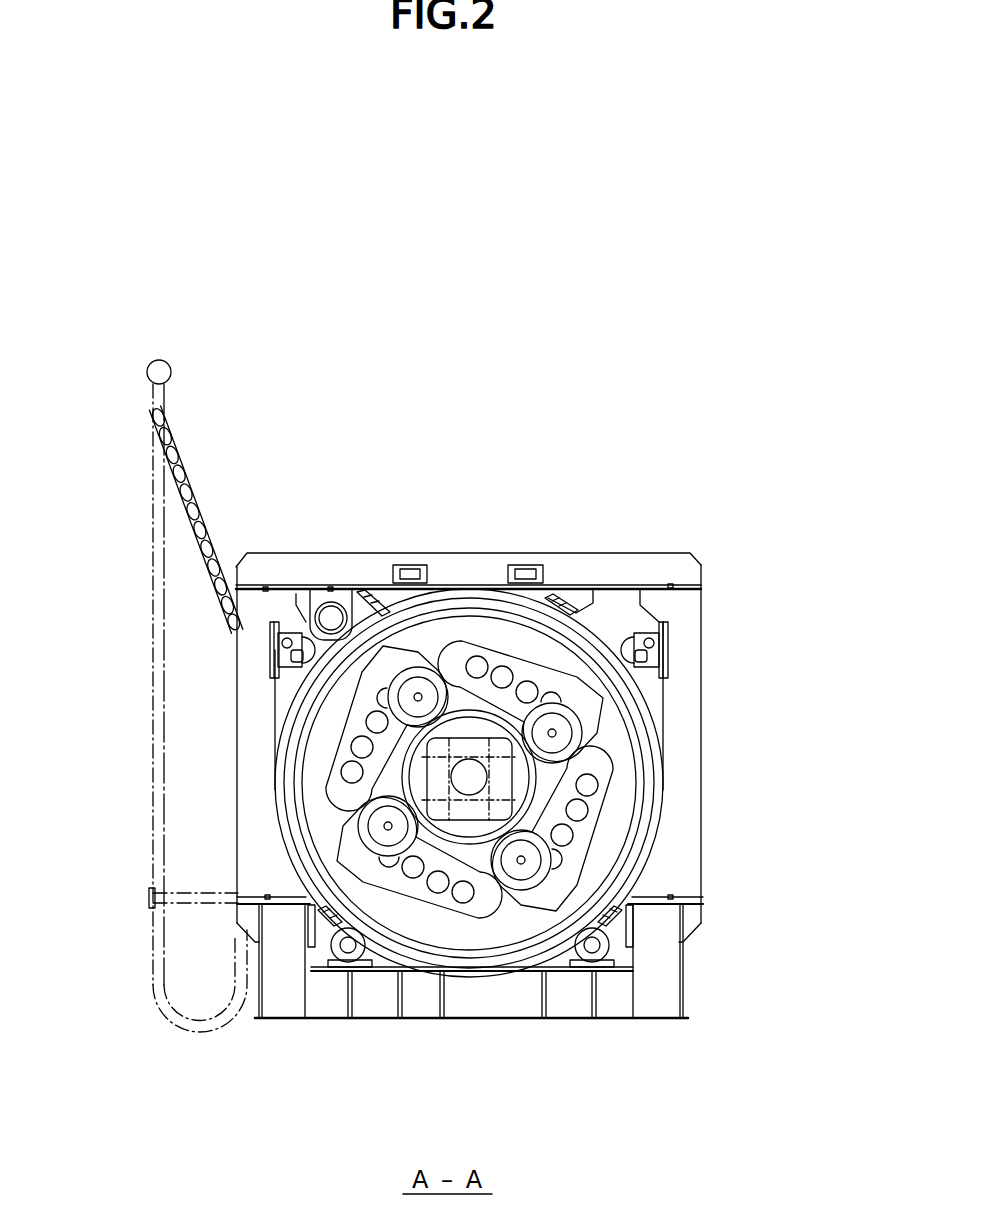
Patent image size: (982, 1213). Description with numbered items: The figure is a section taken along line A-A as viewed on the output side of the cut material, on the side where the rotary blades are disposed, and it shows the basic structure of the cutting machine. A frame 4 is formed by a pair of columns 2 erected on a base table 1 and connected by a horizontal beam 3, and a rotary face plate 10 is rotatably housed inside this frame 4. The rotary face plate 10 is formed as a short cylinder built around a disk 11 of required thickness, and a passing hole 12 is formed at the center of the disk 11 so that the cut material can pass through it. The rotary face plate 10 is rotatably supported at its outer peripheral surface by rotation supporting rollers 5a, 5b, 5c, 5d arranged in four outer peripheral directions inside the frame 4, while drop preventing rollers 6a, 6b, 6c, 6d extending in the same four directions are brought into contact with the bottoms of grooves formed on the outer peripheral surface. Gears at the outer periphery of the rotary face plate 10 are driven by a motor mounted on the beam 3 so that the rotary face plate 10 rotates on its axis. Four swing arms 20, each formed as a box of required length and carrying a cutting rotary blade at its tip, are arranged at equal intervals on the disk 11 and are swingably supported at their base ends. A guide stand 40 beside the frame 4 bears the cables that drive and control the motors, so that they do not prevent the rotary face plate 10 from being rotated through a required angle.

The base table 1 is at (683, 981).
The column 2 is at (240, 745).
The horizontal beam 3 is at (338, 553).
The frame 4 is at (445, 661).
The rotation supporting roller 5a is at (348, 945).
The rotation supporting roller 5b is at (296, 643).
The rotation supporting roller 5c is at (672, 665).
The rotation supporting roller 5d is at (592, 945).
The drop preventing roller 6a is at (308, 924).
The drop preventing roller 6b is at (412, 590).
The drop preventing roller 6c is at (584, 588).
The drop preventing roller 6d is at (618, 928).
The rotary face plate 10 is at (451, 751).
The disk 11 is at (636, 790).
The passing hole 12 is at (537, 773).
The swing arm 20 is at (574, 684).
The guide stand 40 is at (152, 507).